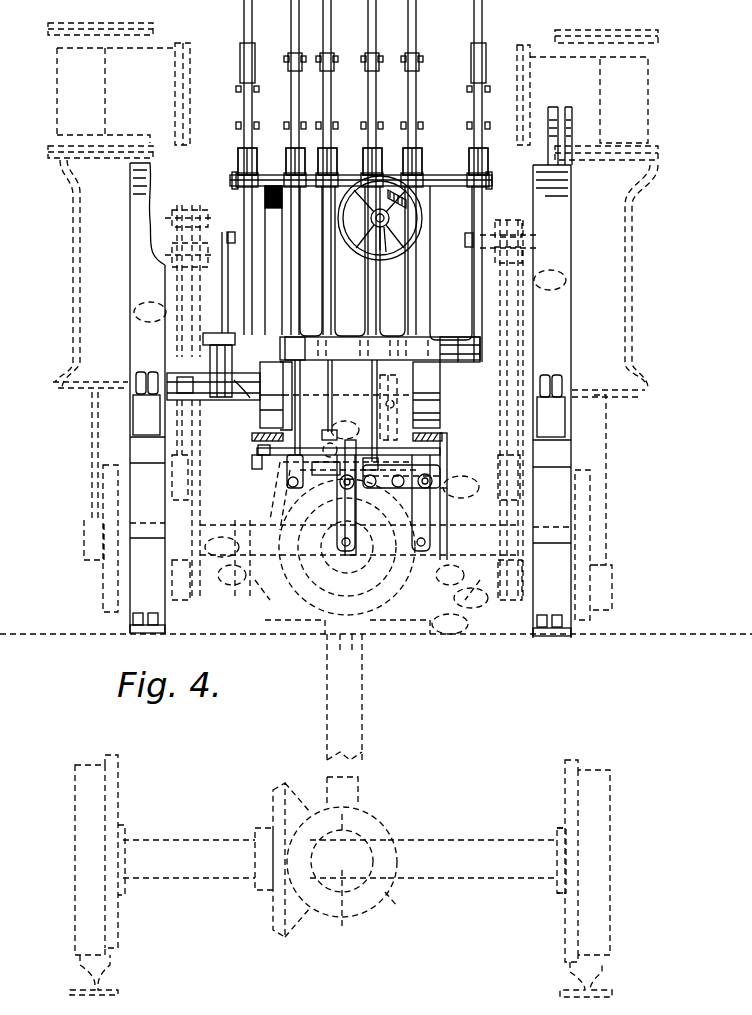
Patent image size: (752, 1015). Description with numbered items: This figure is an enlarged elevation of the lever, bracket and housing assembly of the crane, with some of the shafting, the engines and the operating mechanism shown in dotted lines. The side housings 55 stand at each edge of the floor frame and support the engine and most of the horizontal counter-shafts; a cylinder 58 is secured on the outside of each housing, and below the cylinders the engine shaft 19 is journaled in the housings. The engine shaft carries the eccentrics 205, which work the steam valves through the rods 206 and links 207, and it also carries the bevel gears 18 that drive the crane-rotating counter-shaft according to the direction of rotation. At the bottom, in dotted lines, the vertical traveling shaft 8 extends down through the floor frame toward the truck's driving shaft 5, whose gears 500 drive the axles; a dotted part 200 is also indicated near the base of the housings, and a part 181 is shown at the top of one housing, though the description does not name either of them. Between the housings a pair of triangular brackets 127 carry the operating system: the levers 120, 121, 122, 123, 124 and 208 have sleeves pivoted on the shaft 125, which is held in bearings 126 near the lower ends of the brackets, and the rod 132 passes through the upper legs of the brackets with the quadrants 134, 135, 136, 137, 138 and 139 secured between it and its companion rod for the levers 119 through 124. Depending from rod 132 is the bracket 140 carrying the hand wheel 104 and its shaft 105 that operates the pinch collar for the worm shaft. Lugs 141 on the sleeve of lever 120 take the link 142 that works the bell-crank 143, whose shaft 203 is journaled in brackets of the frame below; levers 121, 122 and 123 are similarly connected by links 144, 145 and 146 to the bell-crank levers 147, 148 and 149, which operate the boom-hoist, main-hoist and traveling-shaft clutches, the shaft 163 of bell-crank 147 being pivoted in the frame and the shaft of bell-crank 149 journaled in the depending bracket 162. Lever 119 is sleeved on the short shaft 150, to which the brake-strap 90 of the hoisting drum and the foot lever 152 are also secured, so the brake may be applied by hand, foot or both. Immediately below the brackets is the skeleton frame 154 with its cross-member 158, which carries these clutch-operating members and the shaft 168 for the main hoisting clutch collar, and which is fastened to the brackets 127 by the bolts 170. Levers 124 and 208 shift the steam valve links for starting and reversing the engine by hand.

The driving shaft 5 is at (338, 910).
The vertical traveling shaft 8 is at (362, 692).
The bevel gears 18 is at (341, 575).
The engine shaft 19 is at (369, 564).
The housings 55 is at (552, 401).
The cylinders 58 is at (598, 213).
The brake-strap 90 is at (195, 378).
The hand wheel 104 is at (357, 252).
The hand wheel shaft 105 is at (384, 252).
The brake lever 119 is at (247, 106).
The rotating-clutch lever 120 is at (295, 107).
The boom-hoist clutch lever 121 is at (329, 106).
The main hoist clutch lever 122 is at (373, 106).
The traveling-shaft clutch lever 123 is at (414, 106).
The valve-link shifting lever 124 is at (480, 106).
The lever shaft 125 is at (395, 375).
The bearings 126 is at (440, 336).
The lever brackets 127 is at (432, 280).
The rod 132 is at (310, 186).
The quadrant 134 is at (238, 165).
The quadrant 135 is at (286, 165).
The quadrant 136 is at (337, 165).
The quadrant 137 is at (382, 165).
The quadrant 138 is at (422, 165).
The quadrant 139 is at (488, 162).
The hand wheel bracket 140 is at (420, 201).
The projecting lugs 141 is at (296, 345).
The link 142 is at (297, 380).
The bell-crank 143 is at (348, 442).
The link 144 is at (332, 390).
The link 145 is at (378, 374).
The link 146 is at (435, 400).
The bell-crank lever 147 is at (347, 429).
The bell-crank lever 148 is at (412, 498).
The bell-crank lever 149 is at (352, 495).
The short shaft 150 is at (252, 403).
The foot lever 152 is at (212, 355).
The skeleton frame 154 is at (442, 436).
The cross-member 158 is at (258, 452).
The depending bracket 162 is at (315, 490).
The bell-crank shaft 163 is at (421, 481).
The clutch-collar shaft 168 is at (435, 500).
The bolts 170 is at (447, 462).
The rod pair 181 is at (553, 110).
The base 200 is at (450, 624).
The lever shaft 203 is at (305, 530).
The eccentrics 205 is at (346, 572).
The eccentric rods 206 is at (348, 398).
The eccentric links 207 is at (195, 210).
The valve-link shifting lever 208 is at (220, 296).
The driving gears 500 is at (401, 909).